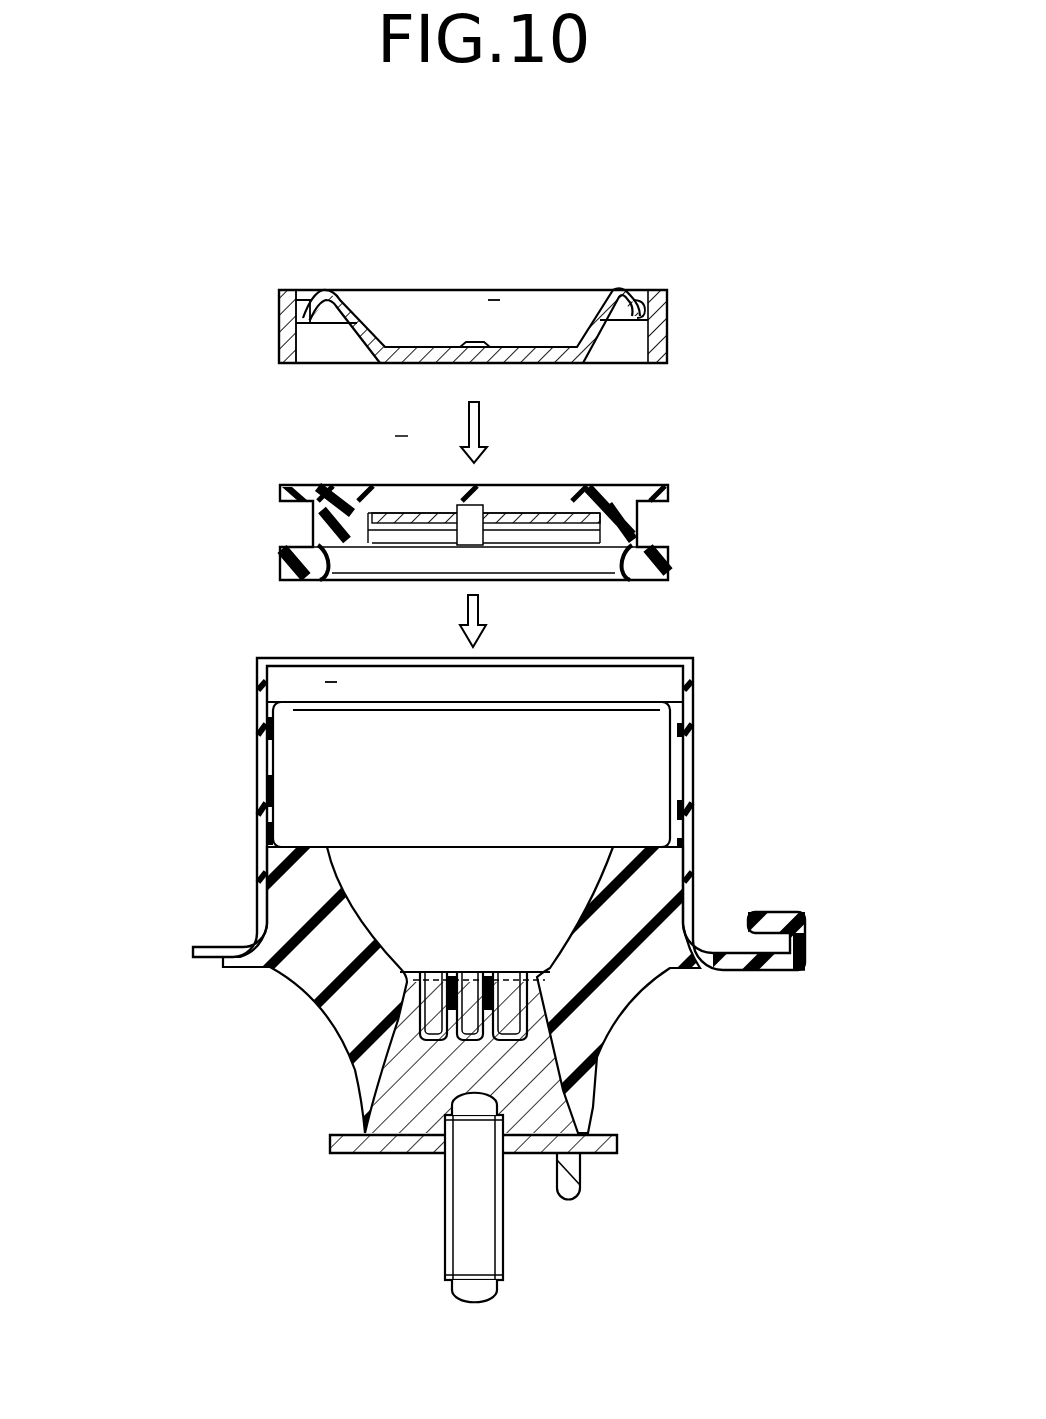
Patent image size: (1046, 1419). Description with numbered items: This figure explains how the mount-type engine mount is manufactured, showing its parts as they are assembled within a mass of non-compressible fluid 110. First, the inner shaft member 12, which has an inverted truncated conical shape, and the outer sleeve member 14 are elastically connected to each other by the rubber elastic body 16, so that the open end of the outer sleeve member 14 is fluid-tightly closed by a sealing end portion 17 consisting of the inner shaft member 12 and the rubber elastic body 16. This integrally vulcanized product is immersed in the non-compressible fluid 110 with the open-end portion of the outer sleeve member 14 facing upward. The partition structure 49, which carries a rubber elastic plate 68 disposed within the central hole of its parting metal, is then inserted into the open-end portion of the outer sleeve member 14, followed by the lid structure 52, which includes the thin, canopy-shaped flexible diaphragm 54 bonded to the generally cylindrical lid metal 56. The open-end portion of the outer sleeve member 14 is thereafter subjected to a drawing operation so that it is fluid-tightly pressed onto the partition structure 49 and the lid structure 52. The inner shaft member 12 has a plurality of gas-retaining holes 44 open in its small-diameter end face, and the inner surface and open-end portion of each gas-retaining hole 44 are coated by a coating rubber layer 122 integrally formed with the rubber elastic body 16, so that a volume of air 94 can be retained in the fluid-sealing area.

The non-compressible fluid 110 is at (120, 1046).
The inner shaft member 12 is at (540, 1096).
The outer sleeve member 14 is at (688, 792).
The rubber elastic body 16 is at (340, 1012).
The sealing end portion 17 is at (529, 961).
The gas-retaining holes 44 is at (476, 982).
The partition structure 49 is at (704, 503).
The lid structure 52 is at (690, 288).
The flexible diaphragm 54 is at (362, 323).
The lid metal 56 is at (667, 320).
The rubber elastic plate 68 is at (428, 520).
The air 94 is at (515, 1013).
The coating rubber layer 122 is at (513, 1060).